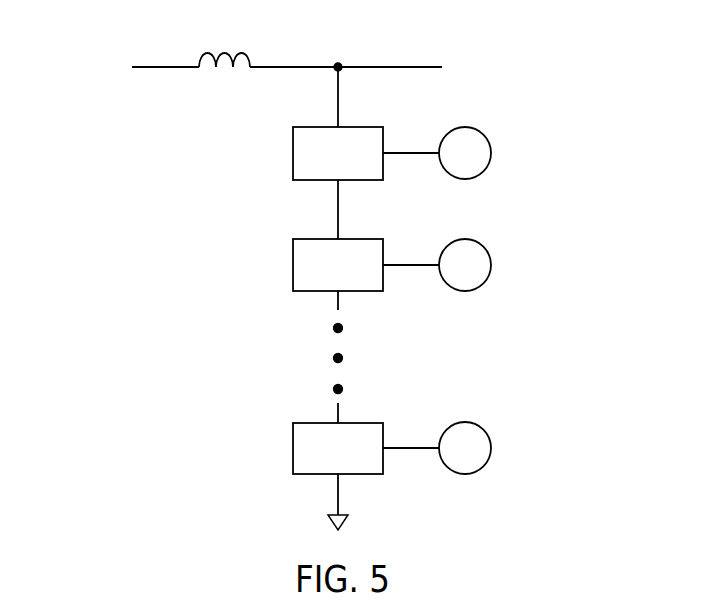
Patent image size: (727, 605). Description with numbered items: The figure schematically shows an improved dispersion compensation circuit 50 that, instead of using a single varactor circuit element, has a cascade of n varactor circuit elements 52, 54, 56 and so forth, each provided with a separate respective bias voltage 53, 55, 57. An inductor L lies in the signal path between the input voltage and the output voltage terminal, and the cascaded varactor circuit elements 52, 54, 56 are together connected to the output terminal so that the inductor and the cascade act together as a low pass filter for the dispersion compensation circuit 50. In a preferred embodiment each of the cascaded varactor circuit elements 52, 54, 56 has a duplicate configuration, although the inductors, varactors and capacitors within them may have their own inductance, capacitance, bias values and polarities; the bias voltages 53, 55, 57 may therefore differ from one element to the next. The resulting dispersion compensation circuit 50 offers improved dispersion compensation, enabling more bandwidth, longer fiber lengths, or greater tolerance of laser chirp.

The dispersion compensation circuit 50 is at (579, 33).
The varactor circuit element 52 is at (293, 153).
The bias voltage 53 is at (491, 153).
The varactor circuit element 54 is at (293, 265).
The bias voltage 55 is at (491, 265).
The varactor circuit element 56 is at (293, 448).
The bias voltage 57 is at (491, 448).